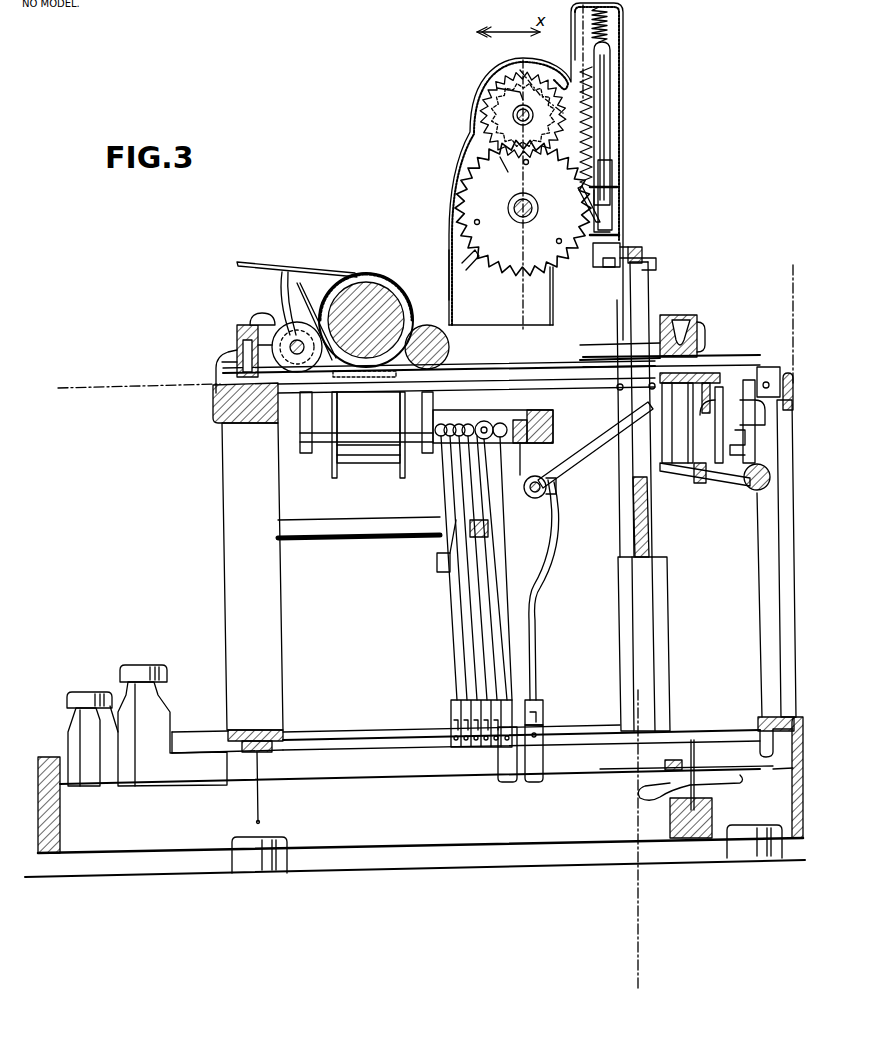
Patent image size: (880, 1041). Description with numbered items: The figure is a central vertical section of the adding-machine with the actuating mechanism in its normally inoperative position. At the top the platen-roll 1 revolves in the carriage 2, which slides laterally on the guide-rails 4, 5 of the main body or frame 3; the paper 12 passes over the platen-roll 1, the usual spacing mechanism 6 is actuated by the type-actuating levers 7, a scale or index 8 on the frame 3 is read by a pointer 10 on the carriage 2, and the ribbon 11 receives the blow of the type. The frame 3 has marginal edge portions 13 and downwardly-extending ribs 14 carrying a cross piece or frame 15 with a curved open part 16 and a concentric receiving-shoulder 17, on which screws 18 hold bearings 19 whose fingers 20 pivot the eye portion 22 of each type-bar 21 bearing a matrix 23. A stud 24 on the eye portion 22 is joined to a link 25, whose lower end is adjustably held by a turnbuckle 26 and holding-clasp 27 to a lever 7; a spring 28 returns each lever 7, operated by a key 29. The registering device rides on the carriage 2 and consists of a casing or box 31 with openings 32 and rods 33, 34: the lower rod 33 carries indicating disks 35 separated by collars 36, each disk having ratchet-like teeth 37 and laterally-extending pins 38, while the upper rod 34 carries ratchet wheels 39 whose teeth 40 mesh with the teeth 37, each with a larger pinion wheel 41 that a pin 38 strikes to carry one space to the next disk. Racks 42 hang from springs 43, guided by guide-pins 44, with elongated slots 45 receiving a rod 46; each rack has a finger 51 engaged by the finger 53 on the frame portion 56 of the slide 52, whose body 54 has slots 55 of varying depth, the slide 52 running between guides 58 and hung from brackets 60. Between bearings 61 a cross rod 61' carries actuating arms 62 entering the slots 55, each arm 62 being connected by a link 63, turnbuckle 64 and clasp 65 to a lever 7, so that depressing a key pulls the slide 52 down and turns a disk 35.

The platen-roll 1 is at (345, 298).
The carriage 2 is at (243, 325).
The main body or frame 3 is at (222, 474).
The guide-rail 4 is at (222, 372).
The guide-rail 5 is at (700, 352).
The spacing mechanism 6 is at (424, 392).
The type-actuating lever 7 is at (482, 752).
The scale or index 8 is at (213, 404).
The pointer 10 is at (214, 384).
The ribbon 11 is at (362, 428).
The paper 12 is at (342, 272).
The marginal edge portion 13 is at (606, 359).
The downwardly-extending rib 14 is at (439, 386).
The cross piece or frame 15 is at (513, 428).
The curved cut-away or open part 16 is at (455, 424).
The receiving-shoulder 17 is at (532, 459).
The screw 18 is at (553, 428).
The bearing or bracket 19 is at (553, 440).
The finger 20 is at (502, 422).
The type-bar 21 is at (452, 486).
The eye portion 22 is at (443, 424).
The symbol-bearing matrix 23 is at (437, 563).
The rearwardly-extending finger or stud 24 is at (486, 420).
The connecting wire or link 25 is at (500, 536).
The turnbuckle 26 is at (456, 705).
The holding-clasp 27 is at (500, 770).
The spring 28 is at (728, 782).
The operating key or finger-piece 29 is at (88, 696).
The casing or box 31 is at (625, 60).
The opening 32 is at (448, 200).
The lower rod 33 is at (512, 206).
The upper rod 34 is at (518, 120).
The indicating disk or wheel 35 is at (502, 274).
The collar 36 is at (540, 208).
The ratchet-like tooth 37 is at (588, 212).
The laterally-extending pin 38 is at (526, 163).
The ratchet wheel or disk 39 is at (505, 98).
The tooth of ratchet wheel 40 is at (497, 90).
The pinion wheel or disk 41 is at (494, 72).
The rack 42 is at (510, 160).
The spring 43 is at (607, 31).
The guide-pin or projection 44 is at (620, 176).
The elongated slot or opening 45 is at (605, 140).
The rod 46 is at (610, 204).
The stud, projection, or finger 51 is at (614, 270).
The slide 52 is at (650, 298).
The stud, projection, or finger 53 is at (643, 253).
The body of slide 54 is at (636, 519).
The slot 55 is at (636, 460).
The frame portion 56 is at (648, 262).
The guide 58 is at (630, 583).
The bracket 60 is at (628, 375).
The bearing 61 is at (528, 499).
The cross rod or bar 61' is at (572, 492).
The actuating arm or finger 62 is at (570, 455).
The wire rod or link 63 is at (538, 565).
The turnbuckle 64 is at (540, 705).
The clasp 65 is at (545, 763).